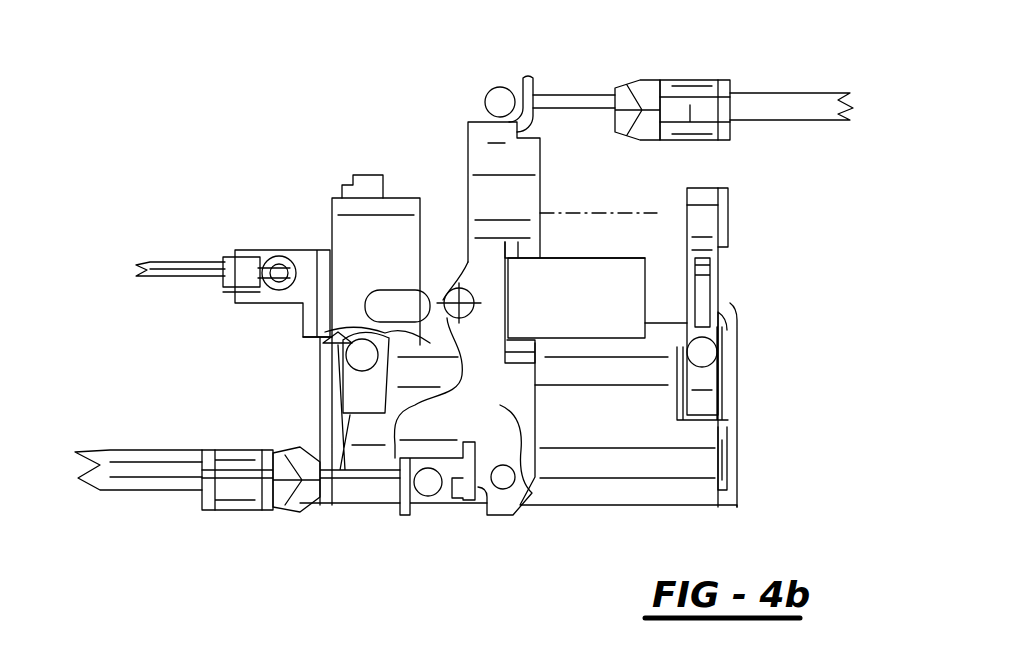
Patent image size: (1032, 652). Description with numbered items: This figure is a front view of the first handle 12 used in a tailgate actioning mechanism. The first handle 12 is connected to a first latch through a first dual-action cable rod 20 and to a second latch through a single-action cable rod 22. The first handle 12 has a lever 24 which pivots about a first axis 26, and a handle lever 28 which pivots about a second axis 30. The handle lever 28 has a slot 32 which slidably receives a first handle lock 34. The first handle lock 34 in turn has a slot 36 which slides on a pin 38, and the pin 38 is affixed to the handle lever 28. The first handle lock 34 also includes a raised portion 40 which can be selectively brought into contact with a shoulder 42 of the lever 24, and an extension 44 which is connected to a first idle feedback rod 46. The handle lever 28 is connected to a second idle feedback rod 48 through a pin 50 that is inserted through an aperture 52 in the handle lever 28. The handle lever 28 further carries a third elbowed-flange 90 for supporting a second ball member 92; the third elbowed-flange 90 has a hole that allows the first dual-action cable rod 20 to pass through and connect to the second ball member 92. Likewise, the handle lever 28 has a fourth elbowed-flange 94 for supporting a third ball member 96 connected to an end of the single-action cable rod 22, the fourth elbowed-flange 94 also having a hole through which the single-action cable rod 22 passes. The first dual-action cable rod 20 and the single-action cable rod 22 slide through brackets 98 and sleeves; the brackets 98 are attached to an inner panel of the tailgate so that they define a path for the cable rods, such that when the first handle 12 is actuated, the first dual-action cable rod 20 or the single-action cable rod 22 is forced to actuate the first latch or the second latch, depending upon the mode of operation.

The first handle 12 is at (853, 400).
The first dual-action cable rod 20 is at (545, 108).
The single-action cable rod 22 is at (325, 495).
The lever 24 is at (700, 497).
The first axis 26 is at (657, 215).
The handle lever 28 is at (508, 188).
The second axis 30 is at (444, 300).
The slot 32 is at (515, 357).
The first handle lock 34 is at (623, 293).
The slot 36 is at (398, 290).
The pin 38 is at (475, 306).
The raised portion 40 is at (395, 198).
The shoulder 42 is at (360, 185).
The extension 44 is at (310, 258).
The first idle feedback rod 46 is at (187, 265).
The second idle feedback rod 48 is at (152, 455).
The pin 50 is at (505, 480).
The aperture 52 is at (512, 422).
The third elbowed-flange 90 is at (528, 76).
The second ball member 92 is at (498, 92).
The fourth elbowed-flange 94 is at (408, 515).
The third ball member 96 is at (430, 486).
The brackets 98 is at (722, 78).